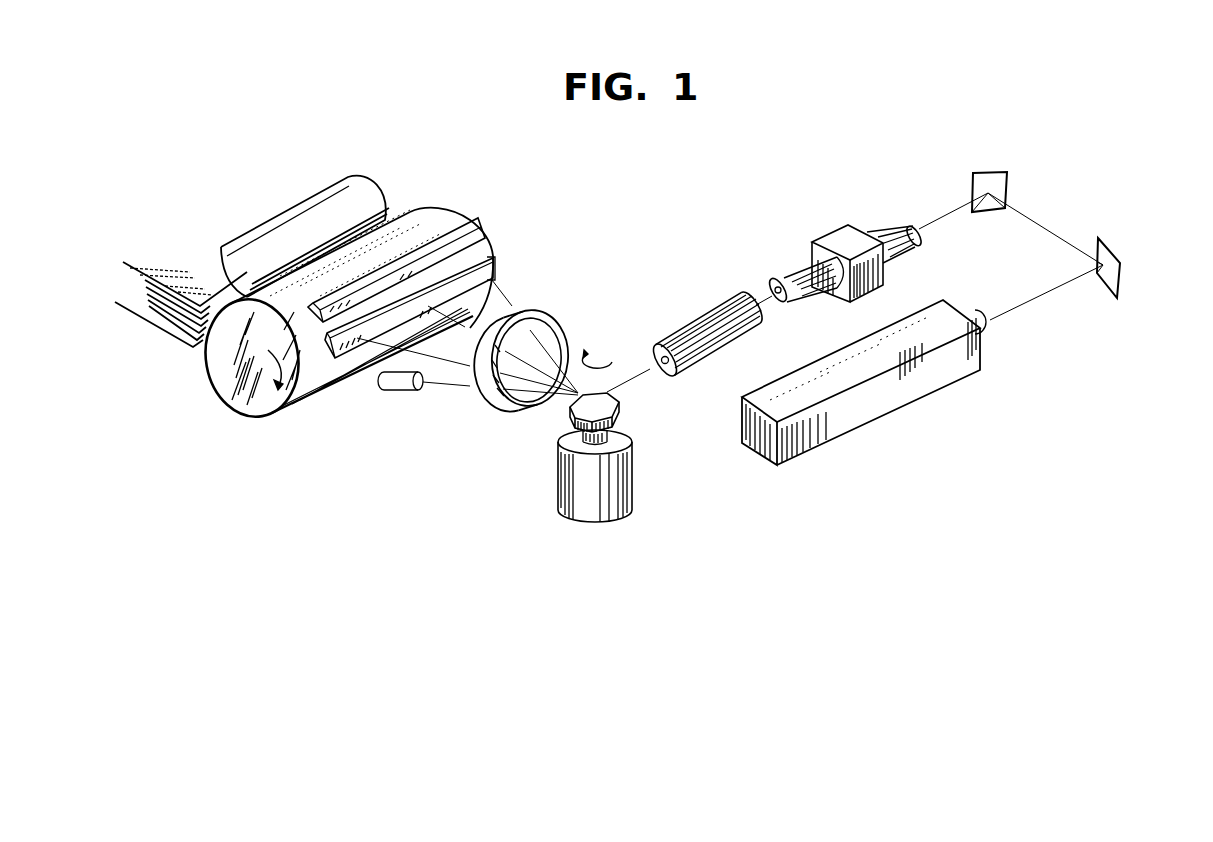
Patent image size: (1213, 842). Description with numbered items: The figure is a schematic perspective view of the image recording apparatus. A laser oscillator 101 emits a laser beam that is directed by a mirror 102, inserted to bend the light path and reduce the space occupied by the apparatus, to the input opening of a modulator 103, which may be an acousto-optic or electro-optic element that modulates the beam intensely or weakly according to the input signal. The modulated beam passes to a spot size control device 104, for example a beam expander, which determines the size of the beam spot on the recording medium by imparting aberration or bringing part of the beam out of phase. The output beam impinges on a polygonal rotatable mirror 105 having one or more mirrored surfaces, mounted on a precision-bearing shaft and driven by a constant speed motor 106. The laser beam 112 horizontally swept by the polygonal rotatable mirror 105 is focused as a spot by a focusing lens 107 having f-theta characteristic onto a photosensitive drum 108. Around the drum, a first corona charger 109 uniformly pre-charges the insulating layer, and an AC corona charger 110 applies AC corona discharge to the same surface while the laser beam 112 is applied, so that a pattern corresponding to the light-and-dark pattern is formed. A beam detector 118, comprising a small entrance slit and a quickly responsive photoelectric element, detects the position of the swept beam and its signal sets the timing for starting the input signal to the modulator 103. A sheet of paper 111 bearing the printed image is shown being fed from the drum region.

The laser oscillator 101 is at (858, 420).
The mirror 102 is at (992, 180).
The modulator 103 is at (840, 240).
The spot size control device 104 is at (702, 317).
The polygonal rotatable mirror 105 is at (613, 407).
The constant speed motor 106 is at (620, 468).
The focusing lens 107 is at (537, 337).
The photosensitive drum 108 is at (450, 218).
The first corona charger 109 is at (477, 230).
The AC corona charger 110 is at (492, 265).
The recording paper 111 is at (367, 193).
The laser beam 112 is at (493, 298).
The beam detector 118 is at (397, 384).